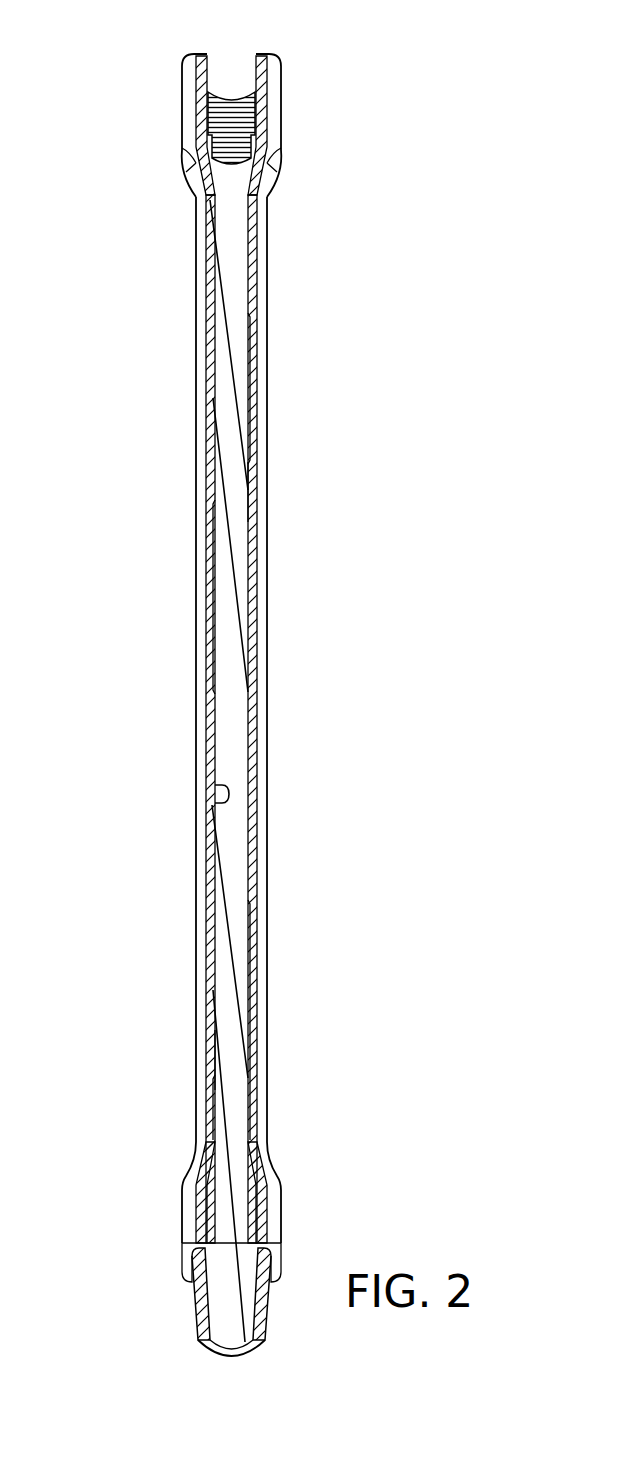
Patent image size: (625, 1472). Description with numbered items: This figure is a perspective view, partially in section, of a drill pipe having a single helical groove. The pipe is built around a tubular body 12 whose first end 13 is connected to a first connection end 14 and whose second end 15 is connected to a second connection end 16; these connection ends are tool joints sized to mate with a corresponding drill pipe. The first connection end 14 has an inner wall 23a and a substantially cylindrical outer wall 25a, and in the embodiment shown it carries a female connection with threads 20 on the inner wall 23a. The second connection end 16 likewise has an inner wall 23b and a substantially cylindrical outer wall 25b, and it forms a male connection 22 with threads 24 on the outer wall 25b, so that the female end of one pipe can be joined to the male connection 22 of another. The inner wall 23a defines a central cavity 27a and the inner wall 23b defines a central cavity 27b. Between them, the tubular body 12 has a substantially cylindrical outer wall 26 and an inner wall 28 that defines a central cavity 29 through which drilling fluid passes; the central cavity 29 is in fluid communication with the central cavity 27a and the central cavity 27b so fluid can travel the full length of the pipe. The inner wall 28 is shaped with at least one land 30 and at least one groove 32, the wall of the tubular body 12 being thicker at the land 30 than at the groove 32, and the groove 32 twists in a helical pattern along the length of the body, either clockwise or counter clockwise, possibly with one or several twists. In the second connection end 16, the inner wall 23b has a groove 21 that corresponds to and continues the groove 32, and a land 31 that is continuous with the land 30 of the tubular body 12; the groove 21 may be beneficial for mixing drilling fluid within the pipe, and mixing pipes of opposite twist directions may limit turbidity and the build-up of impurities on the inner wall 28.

The tubular body 12 is at (262, 507).
The first end 13 is at (265, 195).
The first connection end 14 is at (183, 110).
The second end 15 is at (260, 1145).
The second connection end 16 is at (275, 1230).
The threads 20 is at (240, 112).
The groove 21 is at (235, 1203).
The male connection 22 is at (268, 1328).
The inner wall 23a is at (206, 62).
The inner wall 23b is at (210, 1180).
The threads 24 is at (268, 1303).
The outer wall 25a is at (277, 98).
The outer wall 25b is at (275, 1205).
The outer wall 26 is at (197, 368).
The central cavity 27a is at (222, 122).
The central cavity 27b is at (227, 1328).
The inner wall 28 is at (216, 803).
The central cavity 29 is at (225, 718).
The land 30 is at (237, 244).
The land 31 is at (225, 1243).
The groove 32 is at (237, 480).